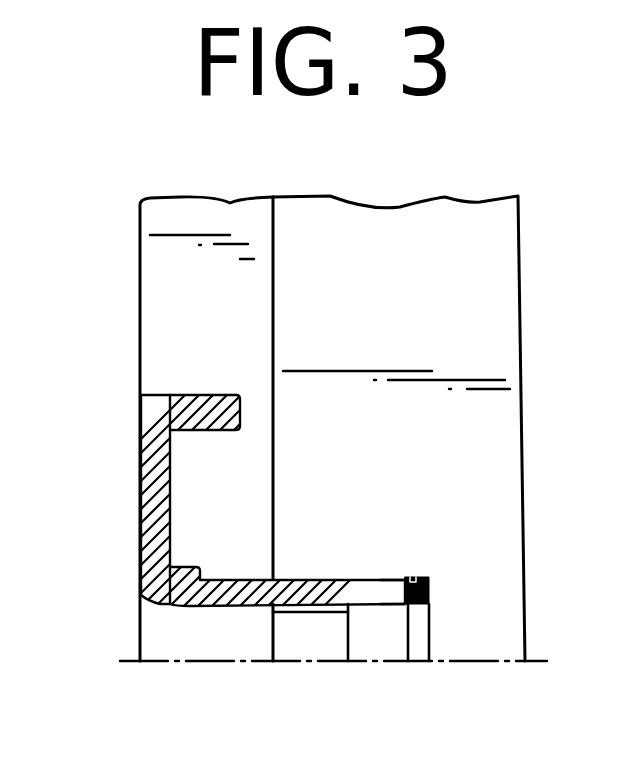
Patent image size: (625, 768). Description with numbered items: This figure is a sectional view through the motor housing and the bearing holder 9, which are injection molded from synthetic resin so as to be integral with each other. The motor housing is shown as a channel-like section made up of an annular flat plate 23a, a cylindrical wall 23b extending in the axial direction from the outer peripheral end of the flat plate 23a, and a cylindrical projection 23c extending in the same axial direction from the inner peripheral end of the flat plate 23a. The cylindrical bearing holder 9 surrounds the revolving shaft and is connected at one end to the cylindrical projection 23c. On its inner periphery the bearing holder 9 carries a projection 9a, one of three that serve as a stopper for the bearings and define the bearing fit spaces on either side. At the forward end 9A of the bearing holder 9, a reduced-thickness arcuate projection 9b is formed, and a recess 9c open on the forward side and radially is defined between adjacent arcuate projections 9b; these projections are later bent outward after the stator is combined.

The bearing holder 9 is at (243, 604).
The projection 9a is at (315, 613).
The forward end 9A is at (395, 577).
The arcuate projection 9b is at (423, 574).
The recess 9c is at (418, 577).
The annular flat plate 23a is at (143, 463).
The cylindrical wall 23b is at (182, 394).
The cylindrical projection 23c is at (146, 600).